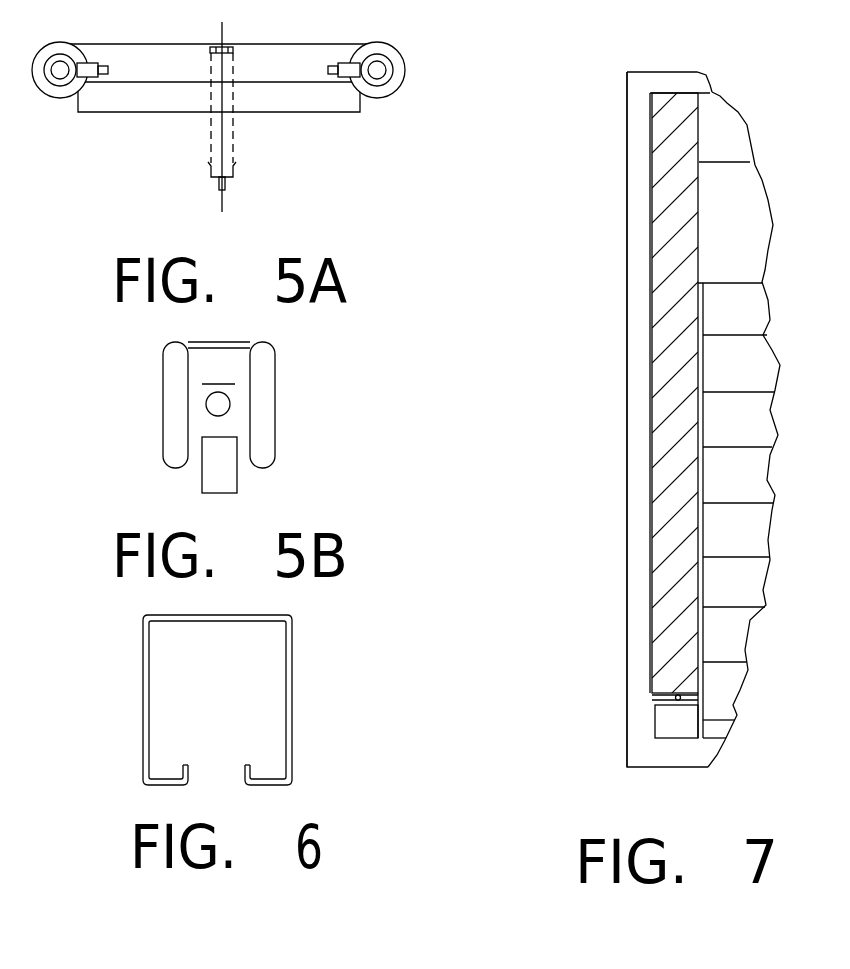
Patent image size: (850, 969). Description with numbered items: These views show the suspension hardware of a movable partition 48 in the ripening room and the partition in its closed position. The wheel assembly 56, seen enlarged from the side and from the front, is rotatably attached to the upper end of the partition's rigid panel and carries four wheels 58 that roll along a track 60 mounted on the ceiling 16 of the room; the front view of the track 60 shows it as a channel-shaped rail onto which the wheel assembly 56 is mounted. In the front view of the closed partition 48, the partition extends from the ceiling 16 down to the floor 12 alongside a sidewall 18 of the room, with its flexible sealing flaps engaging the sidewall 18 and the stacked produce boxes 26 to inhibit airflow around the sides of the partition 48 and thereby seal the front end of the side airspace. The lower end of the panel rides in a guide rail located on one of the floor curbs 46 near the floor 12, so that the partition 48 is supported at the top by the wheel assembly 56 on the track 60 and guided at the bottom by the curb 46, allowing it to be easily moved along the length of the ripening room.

In FIG. 7, the floor 12 is at (672, 757).
In FIG. 7, the ceiling 16 is at (665, 85).
In FIG. 7, the sidewall 18 is at (635, 478).
In FIG. 7, the produce boxes 26 is at (747, 310).
In FIG. 7, the floor curb 46 is at (672, 716).
In FIG. 7, the movable partition 48 is at (673, 250).
In FIG. 5A, the wheel assembly 56 is at (175, 137).
In FIG. 5B, the wheel assembly 56 is at (261, 484).
In FIG. 5A, the wheel 58 is at (67, 48).
In FIG. 5B, the wheel 58 is at (278, 385).
In FIG. 6, the track 60 is at (292, 731).